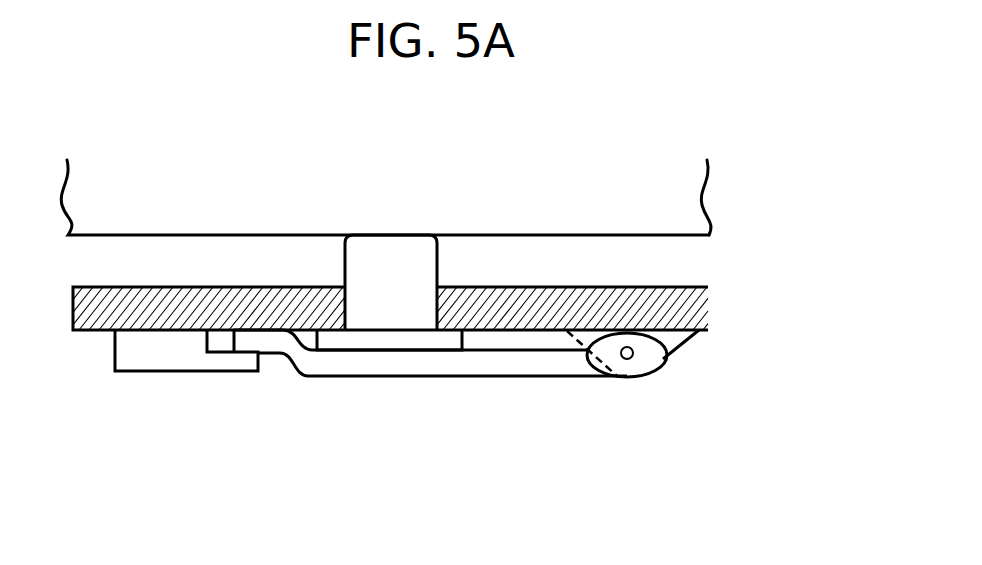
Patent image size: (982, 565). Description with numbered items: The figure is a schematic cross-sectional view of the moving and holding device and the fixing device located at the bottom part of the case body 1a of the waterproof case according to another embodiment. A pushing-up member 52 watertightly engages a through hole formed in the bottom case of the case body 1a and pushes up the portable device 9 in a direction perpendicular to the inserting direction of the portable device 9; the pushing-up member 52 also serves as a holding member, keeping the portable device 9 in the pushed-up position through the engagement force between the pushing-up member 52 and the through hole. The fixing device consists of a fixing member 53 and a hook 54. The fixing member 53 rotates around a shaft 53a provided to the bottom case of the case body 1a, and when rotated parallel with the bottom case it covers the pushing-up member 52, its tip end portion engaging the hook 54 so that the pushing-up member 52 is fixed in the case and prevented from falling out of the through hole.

The portable device 9 is at (687, 198).
The case body 1a is at (693, 307).
The pushing-up member 52 is at (395, 253).
The fixing member 53 is at (400, 363).
The shaft 53a is at (623, 360).
The hook 54 is at (153, 360).